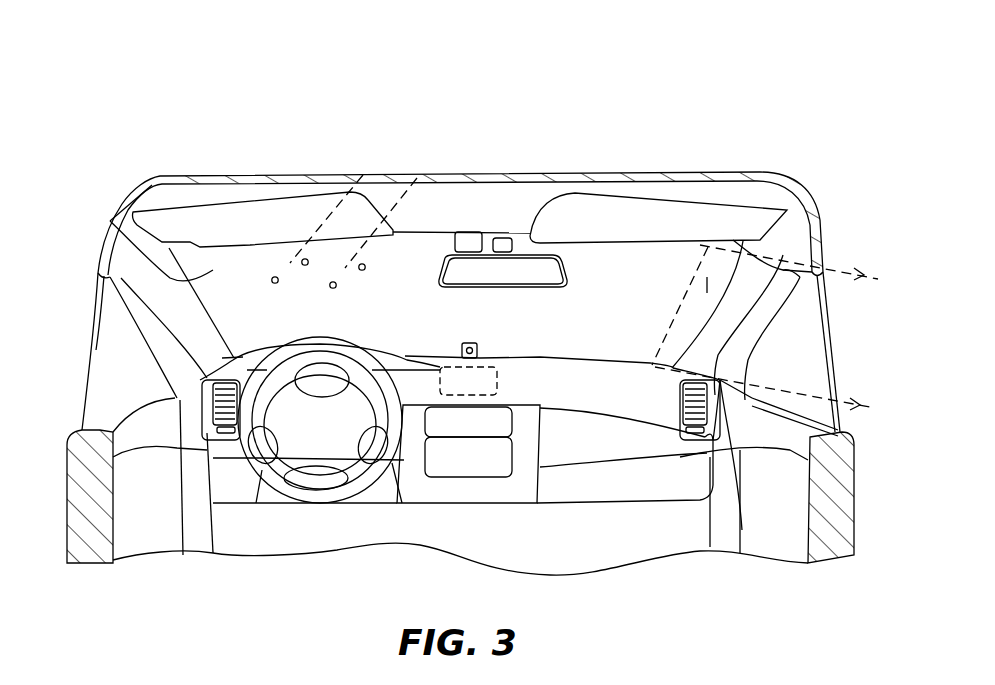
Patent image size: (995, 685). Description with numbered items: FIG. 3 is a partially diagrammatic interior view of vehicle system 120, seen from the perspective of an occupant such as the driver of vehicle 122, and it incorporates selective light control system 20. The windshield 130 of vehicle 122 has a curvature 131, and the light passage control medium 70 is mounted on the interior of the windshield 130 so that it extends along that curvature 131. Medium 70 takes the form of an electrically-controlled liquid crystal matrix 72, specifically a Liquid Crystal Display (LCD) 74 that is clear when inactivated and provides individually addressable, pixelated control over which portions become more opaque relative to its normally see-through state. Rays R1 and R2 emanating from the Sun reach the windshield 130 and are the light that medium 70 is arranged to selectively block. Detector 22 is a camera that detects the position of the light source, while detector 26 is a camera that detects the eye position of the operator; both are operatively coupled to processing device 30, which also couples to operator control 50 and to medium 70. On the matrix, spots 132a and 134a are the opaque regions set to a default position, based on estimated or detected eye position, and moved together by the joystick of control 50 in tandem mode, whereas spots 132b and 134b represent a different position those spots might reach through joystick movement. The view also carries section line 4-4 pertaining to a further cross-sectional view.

The vehicle system 120 is at (761, 137).
The Liquid Crystal Display (LCD) 74 is at (647, 265).
The ray R2 is at (333, 203).
The ray R1 is at (392, 213).
The liquid crystal matrix 72 is at (640, 329).
The detector 22 is at (470, 240).
The curvature 131 is at (110, 221).
The spot 132a is at (272, 278).
The spot 132b is at (303, 266).
The spot 134a is at (335, 288).
The spot 134b is at (366, 267).
The detector 26 is at (466, 343).
The selective light control system 20 is at (501, 371).
The processing device 30 is at (481, 393).
The operator control 50 is at (481, 433).
The light passage control medium 70 is at (697, 315).
The windshield 130 is at (710, 285).
The section line 4- 4 is at (776, 336).
The vehicle 122 is at (67, 519).